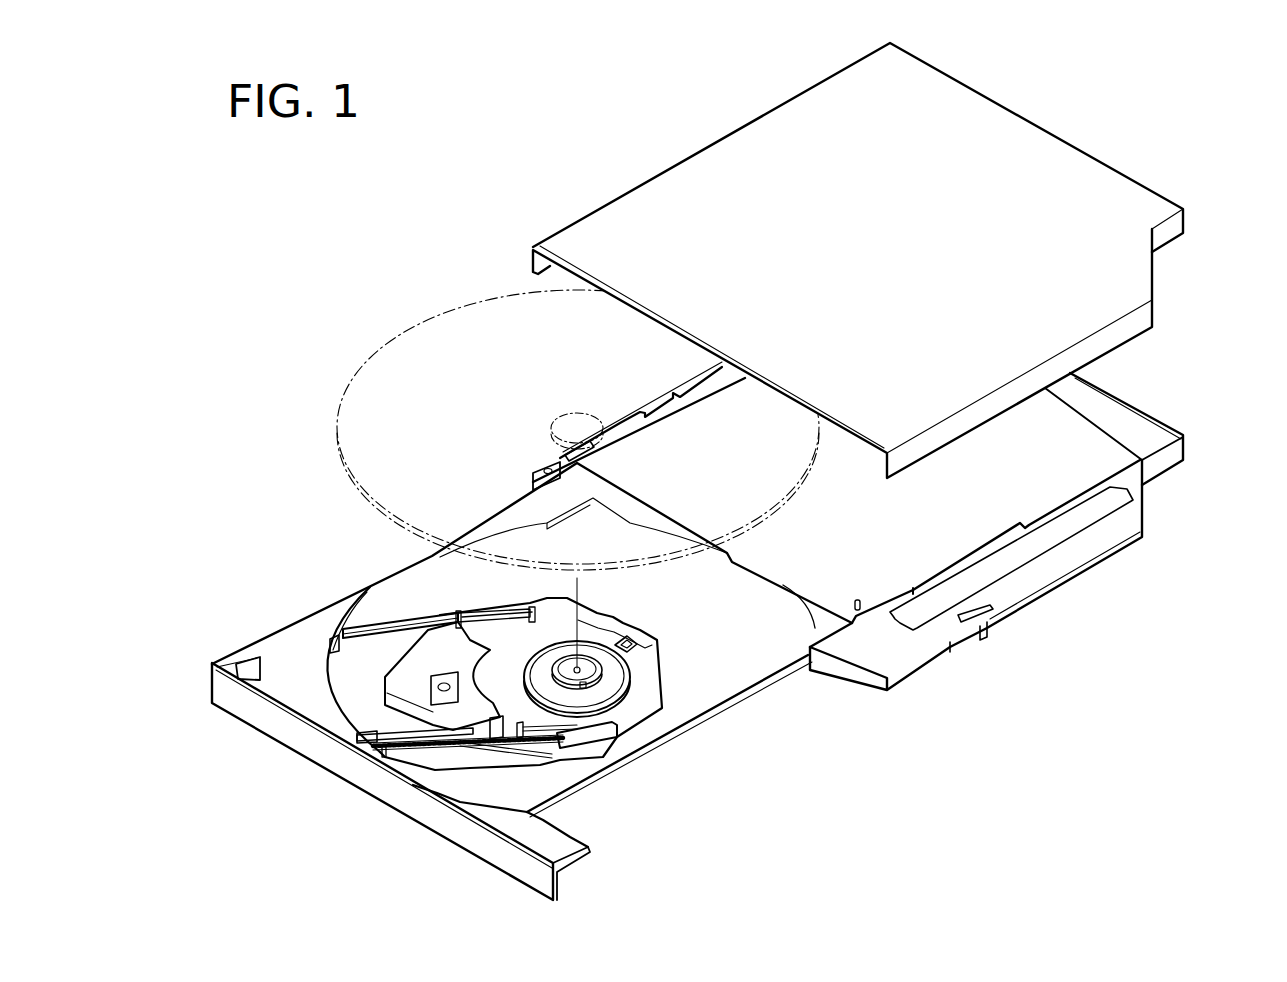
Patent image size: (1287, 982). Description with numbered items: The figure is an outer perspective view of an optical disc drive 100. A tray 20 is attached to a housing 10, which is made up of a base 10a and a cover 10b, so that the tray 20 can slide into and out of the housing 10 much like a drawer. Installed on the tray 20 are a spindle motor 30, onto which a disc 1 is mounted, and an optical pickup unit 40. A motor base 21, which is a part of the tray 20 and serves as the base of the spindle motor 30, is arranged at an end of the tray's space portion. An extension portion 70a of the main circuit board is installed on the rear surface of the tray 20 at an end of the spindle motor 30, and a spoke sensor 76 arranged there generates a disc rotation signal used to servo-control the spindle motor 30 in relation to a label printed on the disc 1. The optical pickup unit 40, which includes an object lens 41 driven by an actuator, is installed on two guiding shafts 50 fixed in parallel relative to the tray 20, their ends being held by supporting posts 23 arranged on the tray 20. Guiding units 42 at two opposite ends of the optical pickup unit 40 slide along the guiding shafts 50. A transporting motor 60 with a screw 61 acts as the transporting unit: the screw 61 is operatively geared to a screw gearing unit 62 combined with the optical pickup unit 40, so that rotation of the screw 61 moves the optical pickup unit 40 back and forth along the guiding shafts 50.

The optical disc drive 100 is at (389, 246).
The disc 1 is at (364, 384).
The housing 10 is at (1228, 308).
The base 10a is at (1160, 417).
The cover 10b is at (1154, 322).
The tray 20 is at (578, 846).
The motor base 21 is at (650, 697).
The supporting post 23 is at (330, 647).
The spindle motor 30 is at (613, 672).
The optical pickup unit 40 is at (392, 682).
The object lens 41 is at (458, 676).
The guiding unit 42 is at (457, 612).
The guiding shaft 50 is at (362, 630).
The transporting motor 60 is at (620, 735).
The screw 61 is at (403, 752).
The screw gearing unit 62 is at (480, 742).
The extension portion of main circuit board 70a is at (636, 646).
The spoke sensor 76 is at (628, 635).